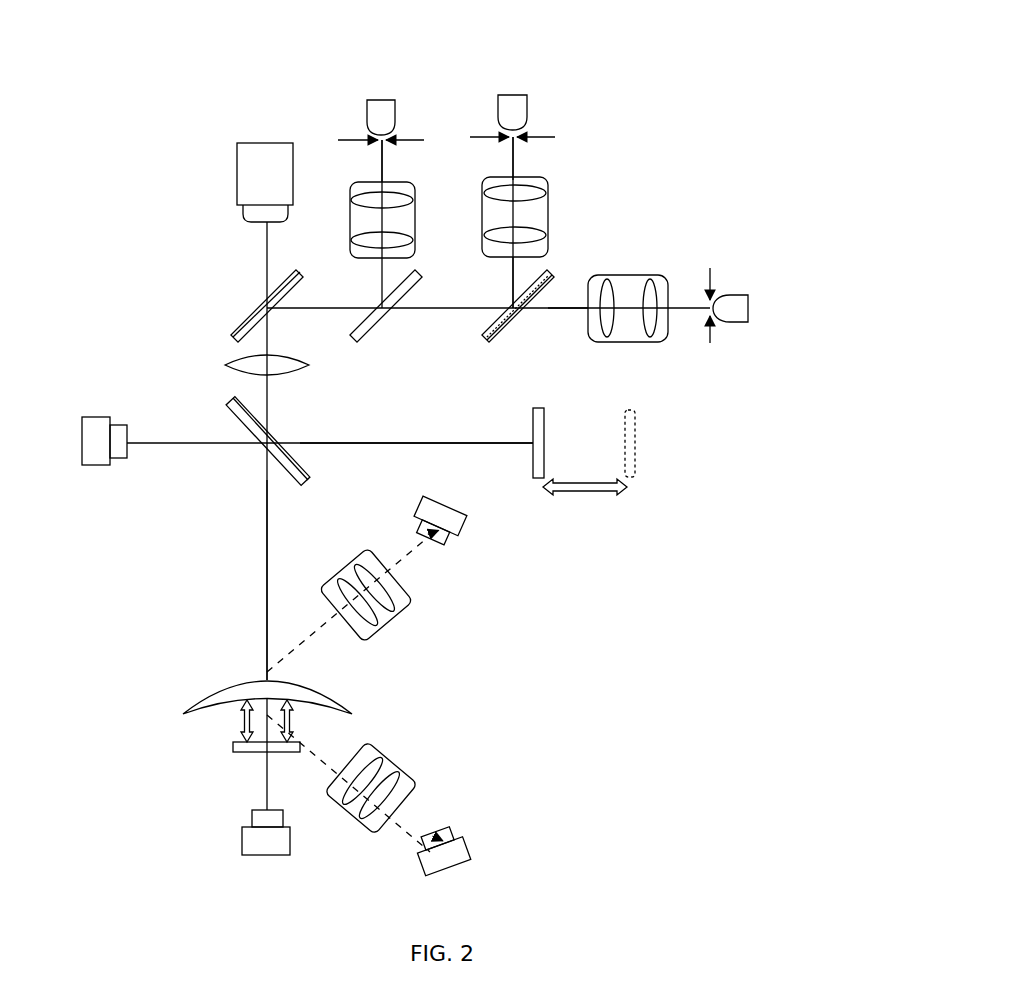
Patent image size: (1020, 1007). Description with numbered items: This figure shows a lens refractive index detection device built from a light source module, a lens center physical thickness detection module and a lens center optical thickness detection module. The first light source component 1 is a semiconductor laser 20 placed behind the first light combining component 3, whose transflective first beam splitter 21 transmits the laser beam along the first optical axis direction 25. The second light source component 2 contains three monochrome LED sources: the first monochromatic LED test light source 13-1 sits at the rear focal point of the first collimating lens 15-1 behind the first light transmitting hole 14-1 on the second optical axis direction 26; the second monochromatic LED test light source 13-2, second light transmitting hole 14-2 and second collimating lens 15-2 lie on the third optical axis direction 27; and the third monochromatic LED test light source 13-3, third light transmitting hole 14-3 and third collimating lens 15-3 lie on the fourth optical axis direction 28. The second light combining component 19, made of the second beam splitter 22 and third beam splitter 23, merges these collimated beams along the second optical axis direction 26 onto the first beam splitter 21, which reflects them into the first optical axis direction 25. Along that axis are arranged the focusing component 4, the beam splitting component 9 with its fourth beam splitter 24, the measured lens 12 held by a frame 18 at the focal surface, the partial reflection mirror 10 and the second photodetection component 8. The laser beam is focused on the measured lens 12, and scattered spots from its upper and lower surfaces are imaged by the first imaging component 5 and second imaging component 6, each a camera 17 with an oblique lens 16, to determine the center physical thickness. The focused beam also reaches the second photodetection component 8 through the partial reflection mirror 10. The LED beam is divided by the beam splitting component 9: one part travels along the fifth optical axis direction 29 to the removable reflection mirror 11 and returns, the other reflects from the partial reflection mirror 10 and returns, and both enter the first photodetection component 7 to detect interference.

The first light source component 1 is at (235, 145).
The semiconductor laser 20 is at (235, 193).
The first light combining component 3 is at (228, 312).
The first beam splitter 21 is at (255, 310).
The focusing component 4 is at (225, 365).
The beam splitting component 9 is at (285, 427).
The fourth beam splitter 24 is at (260, 452).
The first optical axis direction 25 is at (263, 578).
The first photodetection component 7 is at (102, 465).
The removable reflection mirror 11 is at (544, 452).
The fifth optical axis direction 29 is at (430, 443).
The third monochromatic LED test light source 13-3 is at (378, 100).
The third light transmitting hole 14-3 is at (373, 135).
The third collimating lens 15-3 is at (350, 187).
The fourth optical axis direction 28 is at (385, 172).
The third beam splitter 23 is at (382, 317).
The second monochromatic LED test light source 13-2 is at (510, 95).
The second light transmitting hole 14-2 is at (528, 130).
The second collimating lens 15-2 is at (548, 193).
The second light combining component 19 is at (458, 337).
The second beam splitter 22 is at (513, 313).
The third optical axis direction 27 is at (517, 272).
The second light source component 2 is at (600, 208).
The second optical axis direction 26 is at (557, 310).
The first collimating lens 15-1 is at (642, 277).
The first light transmitting hole 14-1 is at (713, 302).
The first monochromatic LED test light source 13-1 is at (748, 306).
The measured lens 12 is at (215, 682).
The frame 18 is at (238, 722).
The partial reflection mirror 10 is at (247, 752).
The second photodetection component 8 is at (242, 845).
The first imaging component 5 is at (457, 600).
The second imaging component 6 is at (477, 813).
The oblique lens 16 is at (380, 620).
The camera 17 is at (458, 535).